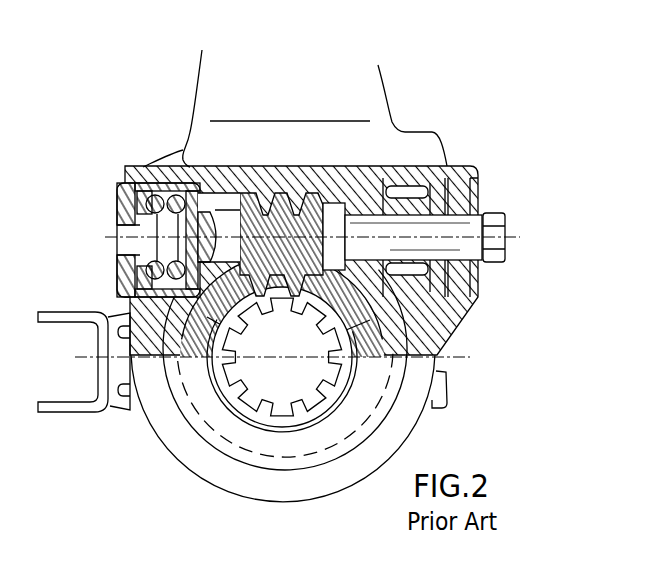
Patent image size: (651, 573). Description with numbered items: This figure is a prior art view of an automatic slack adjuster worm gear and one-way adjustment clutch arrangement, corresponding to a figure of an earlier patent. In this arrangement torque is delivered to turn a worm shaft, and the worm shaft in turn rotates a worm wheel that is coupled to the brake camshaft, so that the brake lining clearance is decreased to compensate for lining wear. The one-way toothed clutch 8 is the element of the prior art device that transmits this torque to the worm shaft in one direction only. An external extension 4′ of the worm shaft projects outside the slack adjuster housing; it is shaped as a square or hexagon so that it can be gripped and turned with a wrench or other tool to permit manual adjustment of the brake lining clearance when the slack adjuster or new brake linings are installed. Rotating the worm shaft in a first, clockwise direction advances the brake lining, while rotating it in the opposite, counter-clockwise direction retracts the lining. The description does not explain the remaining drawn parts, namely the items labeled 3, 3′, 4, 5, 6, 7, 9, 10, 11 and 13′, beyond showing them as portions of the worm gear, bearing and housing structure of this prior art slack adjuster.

The worm wheel 3 is at (315, 315).
The worm wheel hub 3′ is at (332, 402).
The worm 4 is at (326, 176).
The extension 4′ is at (503, 220).
The bearing cap 5 is at (479, 180).
The bearing 6 is at (433, 182).
The spacer ring 7 is at (445, 183).
The toothed clutch 8 is at (352, 213).
The ball bearing 9 is at (153, 198).
The sleeve 10 is at (187, 166).
The cover 11 is at (118, 200).
The mounting bracket 13′ is at (115, 325).